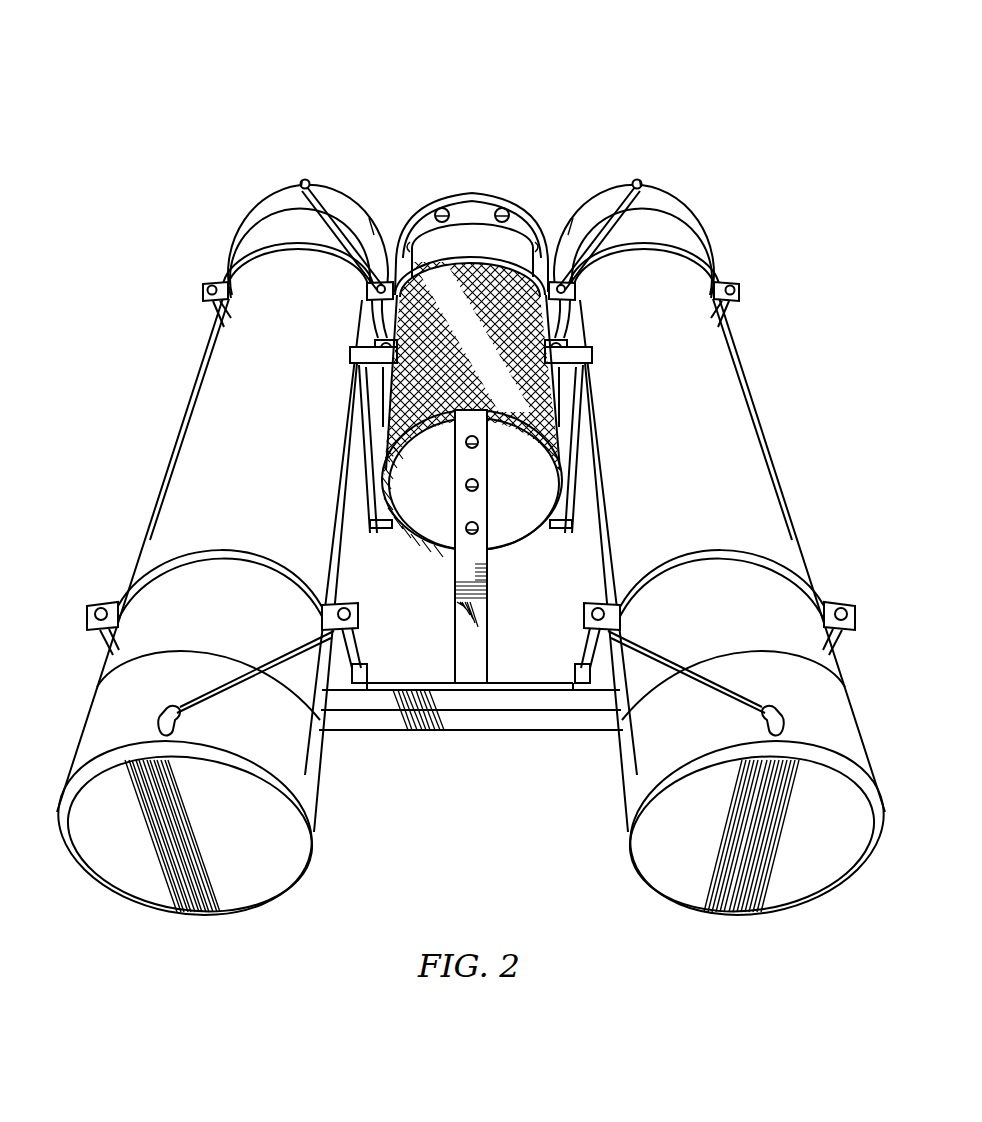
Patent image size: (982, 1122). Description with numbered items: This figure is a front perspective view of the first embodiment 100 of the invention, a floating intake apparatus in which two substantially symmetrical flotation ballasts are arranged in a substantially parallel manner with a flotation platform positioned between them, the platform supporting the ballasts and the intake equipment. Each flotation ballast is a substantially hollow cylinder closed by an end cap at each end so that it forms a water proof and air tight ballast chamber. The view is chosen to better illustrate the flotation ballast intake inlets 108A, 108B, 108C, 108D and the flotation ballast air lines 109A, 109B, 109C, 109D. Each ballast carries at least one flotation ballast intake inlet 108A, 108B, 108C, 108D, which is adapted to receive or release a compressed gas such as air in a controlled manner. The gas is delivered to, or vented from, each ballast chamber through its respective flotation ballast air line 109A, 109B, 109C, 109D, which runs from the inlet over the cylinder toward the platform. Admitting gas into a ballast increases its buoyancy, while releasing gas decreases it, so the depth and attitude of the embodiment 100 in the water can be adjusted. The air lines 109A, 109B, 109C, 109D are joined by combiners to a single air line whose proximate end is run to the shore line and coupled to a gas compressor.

The first embodiment 100 is at (400, 68).
The flotation ballast intake inlet 108A is at (300, 178).
The flotation ballast intake inlet 108B is at (184, 712).
The flotation ballast intake inlet 108C is at (641, 178).
The flotation ballast intake inlet 108D is at (760, 712).
The flotation ballast air line 109A is at (326, 202).
The flotation ballast air line 109B is at (268, 658).
The flotation ballast air line 109C is at (616, 202).
The flotation ballast air line 109D is at (688, 642).